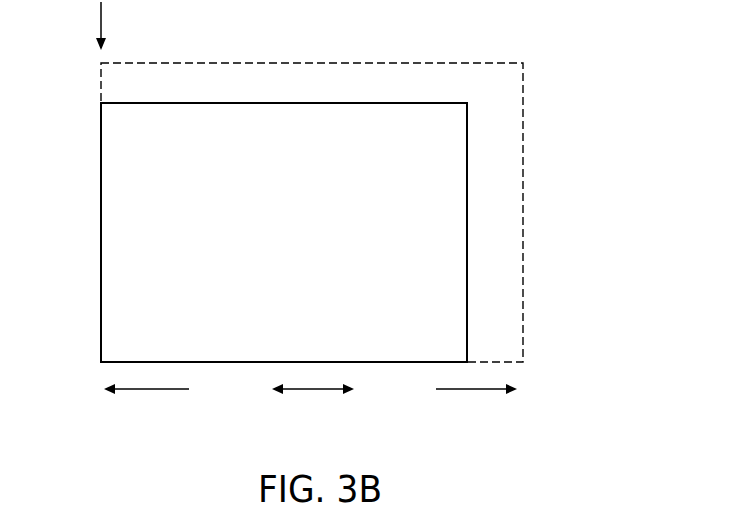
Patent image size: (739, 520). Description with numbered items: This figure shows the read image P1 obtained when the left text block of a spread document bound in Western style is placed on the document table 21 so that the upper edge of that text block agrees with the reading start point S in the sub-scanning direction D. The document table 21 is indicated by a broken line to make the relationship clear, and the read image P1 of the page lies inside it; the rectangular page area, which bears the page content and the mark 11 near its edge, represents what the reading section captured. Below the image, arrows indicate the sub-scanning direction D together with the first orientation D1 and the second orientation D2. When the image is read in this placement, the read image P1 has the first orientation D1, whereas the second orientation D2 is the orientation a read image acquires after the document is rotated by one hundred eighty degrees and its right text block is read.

The document table 21 is at (523, 118).
The read image P1 is at (128, 165).
The reading start point S is at (101, 22).
The page identification mark 11 is at (450, 235).
The first orientation D1 is at (156, 391).
The sub-scanning direction D is at (317, 391).
The second orientation D2 is at (465, 391).